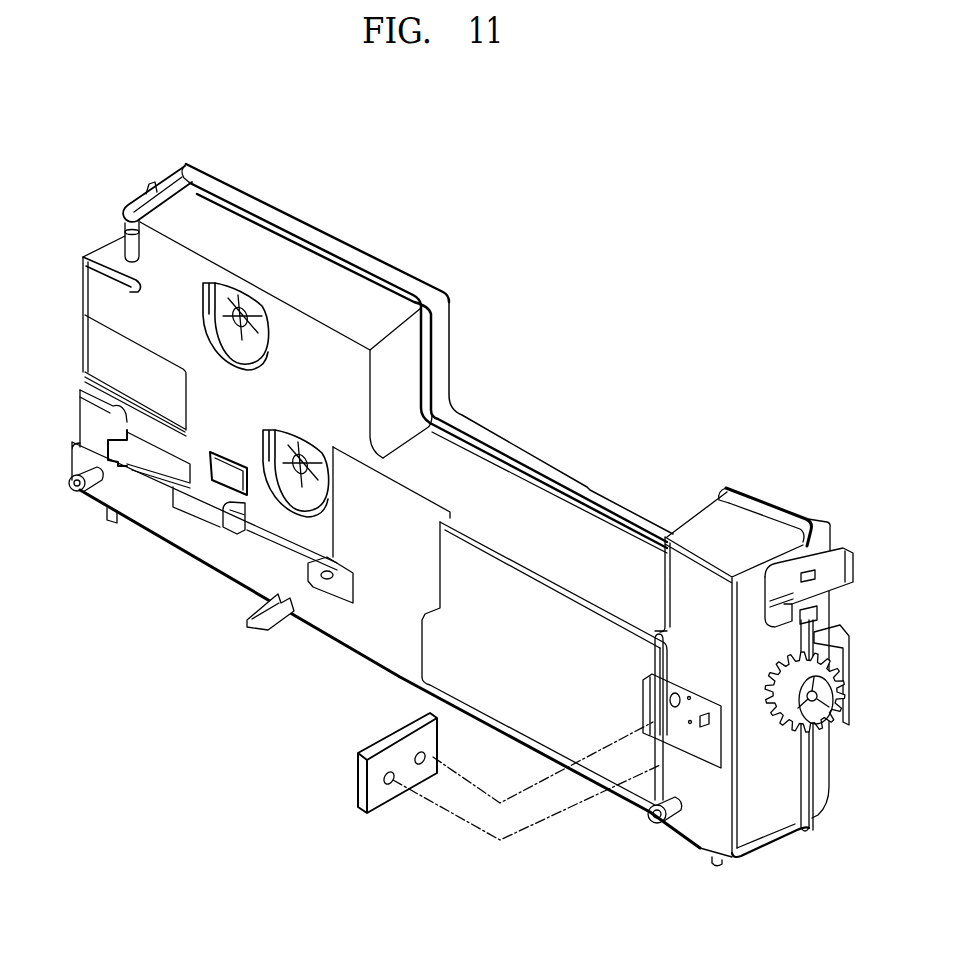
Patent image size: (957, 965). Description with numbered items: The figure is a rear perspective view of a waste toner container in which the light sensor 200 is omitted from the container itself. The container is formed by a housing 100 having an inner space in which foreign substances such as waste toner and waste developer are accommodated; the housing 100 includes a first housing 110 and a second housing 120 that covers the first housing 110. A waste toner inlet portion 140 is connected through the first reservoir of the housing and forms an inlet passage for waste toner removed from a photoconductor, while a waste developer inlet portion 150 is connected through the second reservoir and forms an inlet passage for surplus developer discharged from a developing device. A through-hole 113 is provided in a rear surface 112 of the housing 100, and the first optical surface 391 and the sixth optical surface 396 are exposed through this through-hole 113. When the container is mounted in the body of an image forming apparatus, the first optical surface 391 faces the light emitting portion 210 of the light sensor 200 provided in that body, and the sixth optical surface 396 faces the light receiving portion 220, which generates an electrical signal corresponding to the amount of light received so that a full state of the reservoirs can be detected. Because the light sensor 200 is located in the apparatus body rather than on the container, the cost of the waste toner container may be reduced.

The housing 100 is at (776, 497).
The first housing 110 is at (388, 388).
The rear surface 112 is at (682, 587).
The through-hole 113 is at (662, 824).
The second housing 120 is at (453, 322).
The waste toner inlet portion 140 is at (231, 303).
The waste developer inlet portion 150 is at (290, 432).
The light sensor 200 is at (376, 743).
The light emitting portion 210 is at (390, 781).
The light receiving portion 220 is at (427, 758).
The first optical surface 391 is at (703, 724).
The sixth optical surface 396 is at (655, 736).